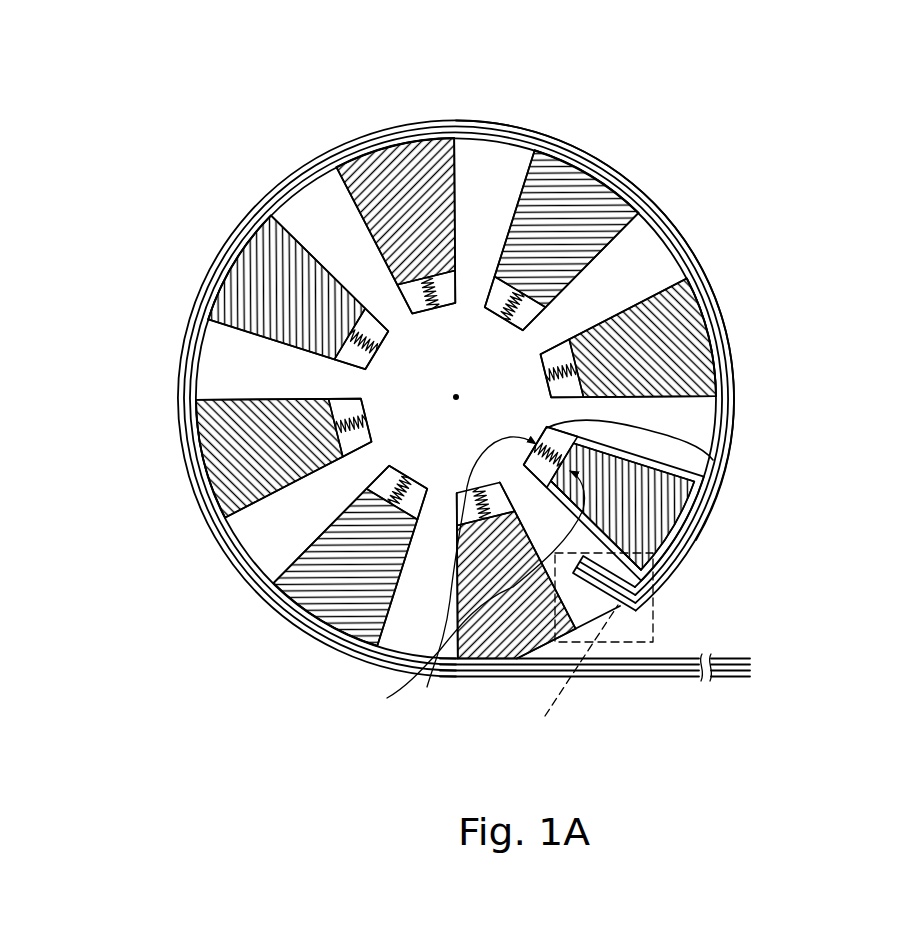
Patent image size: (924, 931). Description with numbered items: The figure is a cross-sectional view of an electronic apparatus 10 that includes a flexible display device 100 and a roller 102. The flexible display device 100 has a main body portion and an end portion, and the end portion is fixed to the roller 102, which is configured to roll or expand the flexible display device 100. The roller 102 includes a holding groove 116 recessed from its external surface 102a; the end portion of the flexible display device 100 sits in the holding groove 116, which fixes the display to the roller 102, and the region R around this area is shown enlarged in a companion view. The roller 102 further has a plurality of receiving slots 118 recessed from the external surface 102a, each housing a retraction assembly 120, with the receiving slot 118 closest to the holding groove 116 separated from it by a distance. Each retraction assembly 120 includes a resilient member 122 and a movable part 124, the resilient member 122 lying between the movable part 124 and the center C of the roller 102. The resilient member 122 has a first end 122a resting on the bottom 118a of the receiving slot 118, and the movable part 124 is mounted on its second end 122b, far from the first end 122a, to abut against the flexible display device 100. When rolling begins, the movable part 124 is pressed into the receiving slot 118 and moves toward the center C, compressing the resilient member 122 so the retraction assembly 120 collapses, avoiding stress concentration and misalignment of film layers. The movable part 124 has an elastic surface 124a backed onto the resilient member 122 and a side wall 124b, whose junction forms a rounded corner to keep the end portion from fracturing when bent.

The electronic apparatus 10 is at (80, 48).
The flexible display device 100 is at (733, 680).
The roller 102 is at (502, 167).
The external surface of the roller 102a is at (688, 240).
The center of the roller C is at (469, 396).
The holding groove 116 is at (590, 590).
The receiving slot 118 is at (462, 160).
The bottom of the receiving slot 118a is at (438, 290).
The retraction assembly 120 is at (160, 566).
The resilient member 122 is at (682, 461).
The first end of the resilient member 122a is at (455, 595).
The second end of the resilient member 122b is at (470, 580).
The movable part 124 is at (681, 498).
The elastic surface 124a is at (688, 525).
The side wall of the movable part 124b is at (631, 557).
The region R is at (655, 620).